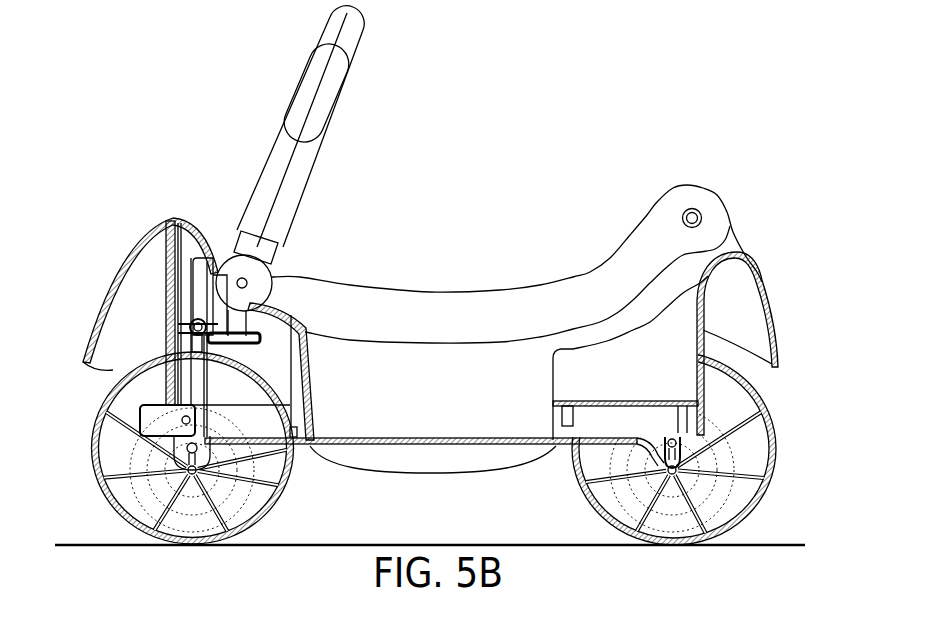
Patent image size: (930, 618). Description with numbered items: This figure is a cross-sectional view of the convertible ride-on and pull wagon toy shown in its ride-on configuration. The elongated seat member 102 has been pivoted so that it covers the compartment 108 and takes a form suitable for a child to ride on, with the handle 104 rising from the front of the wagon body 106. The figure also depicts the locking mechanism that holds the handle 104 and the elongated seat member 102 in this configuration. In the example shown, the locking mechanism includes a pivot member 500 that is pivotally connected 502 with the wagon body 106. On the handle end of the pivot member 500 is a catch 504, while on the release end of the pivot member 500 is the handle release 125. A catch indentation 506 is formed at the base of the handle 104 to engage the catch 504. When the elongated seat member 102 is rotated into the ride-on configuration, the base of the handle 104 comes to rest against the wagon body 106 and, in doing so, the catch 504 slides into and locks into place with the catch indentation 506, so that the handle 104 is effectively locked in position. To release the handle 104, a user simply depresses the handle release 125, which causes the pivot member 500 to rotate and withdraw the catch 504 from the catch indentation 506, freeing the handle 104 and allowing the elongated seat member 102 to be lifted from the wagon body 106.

The elongated seat member 102 is at (573, 297).
The handle 104 is at (300, 185).
The wagon body 106 is at (168, 218).
The compartment 108 is at (462, 378).
The handle release 125 is at (157, 420).
The pivot member 500 is at (197, 295).
The pivotal connection 502 is at (187, 326).
The catch 504 is at (211, 246).
The catch indentation 506 is at (228, 265).